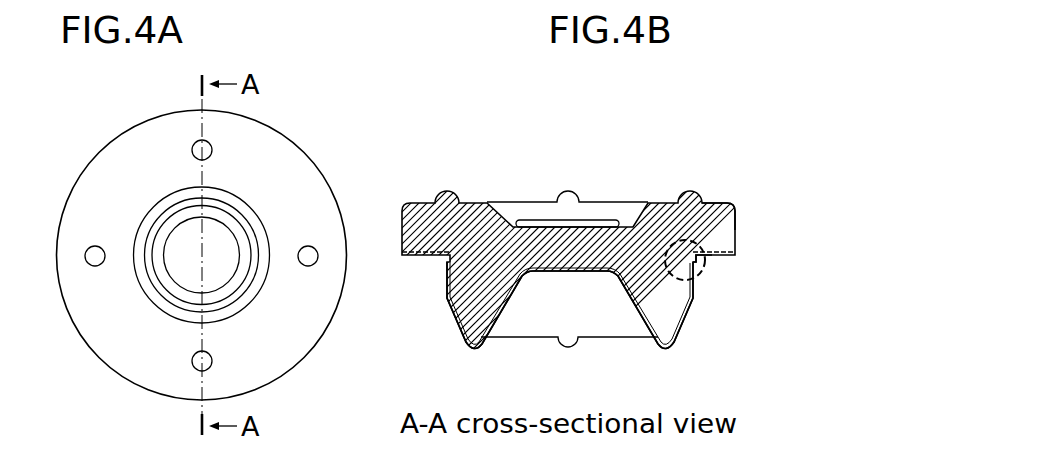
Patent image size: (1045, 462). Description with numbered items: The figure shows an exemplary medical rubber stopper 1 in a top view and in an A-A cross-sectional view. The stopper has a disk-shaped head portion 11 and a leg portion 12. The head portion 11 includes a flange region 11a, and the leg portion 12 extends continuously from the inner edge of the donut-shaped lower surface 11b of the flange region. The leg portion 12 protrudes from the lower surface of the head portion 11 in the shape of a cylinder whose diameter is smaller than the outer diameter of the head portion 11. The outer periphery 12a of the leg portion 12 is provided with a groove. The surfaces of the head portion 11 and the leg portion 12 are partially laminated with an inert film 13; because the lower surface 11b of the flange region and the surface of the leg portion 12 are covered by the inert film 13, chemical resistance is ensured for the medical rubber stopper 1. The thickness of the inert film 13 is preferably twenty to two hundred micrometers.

The medical rubber stopper 1 is at (428, 151).
The head portion 11 is at (658, 212).
The flange region 11a is at (733, 225).
The lower surface of the flange region 11b is at (715, 253).
The leg portion 12 is at (667, 317).
The outer periphery of the leg portion 12a is at (703, 273).
The inert film 13 is at (693, 303).